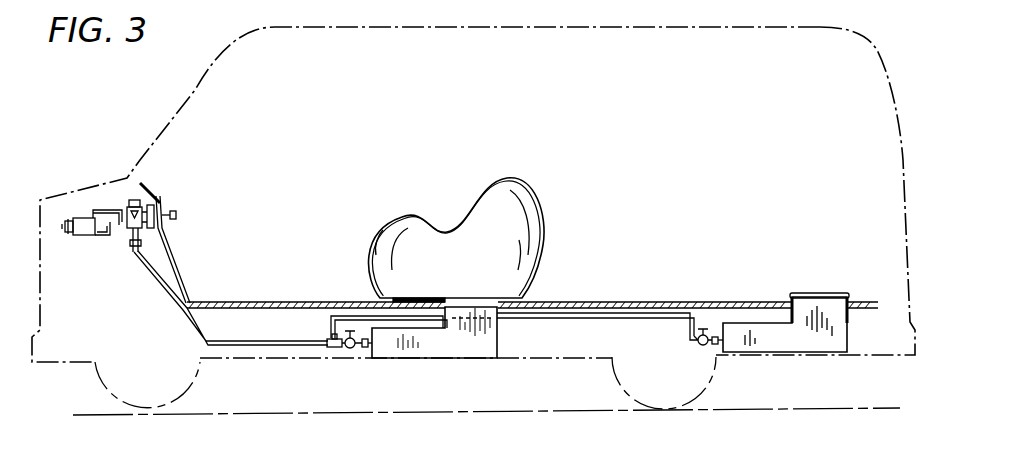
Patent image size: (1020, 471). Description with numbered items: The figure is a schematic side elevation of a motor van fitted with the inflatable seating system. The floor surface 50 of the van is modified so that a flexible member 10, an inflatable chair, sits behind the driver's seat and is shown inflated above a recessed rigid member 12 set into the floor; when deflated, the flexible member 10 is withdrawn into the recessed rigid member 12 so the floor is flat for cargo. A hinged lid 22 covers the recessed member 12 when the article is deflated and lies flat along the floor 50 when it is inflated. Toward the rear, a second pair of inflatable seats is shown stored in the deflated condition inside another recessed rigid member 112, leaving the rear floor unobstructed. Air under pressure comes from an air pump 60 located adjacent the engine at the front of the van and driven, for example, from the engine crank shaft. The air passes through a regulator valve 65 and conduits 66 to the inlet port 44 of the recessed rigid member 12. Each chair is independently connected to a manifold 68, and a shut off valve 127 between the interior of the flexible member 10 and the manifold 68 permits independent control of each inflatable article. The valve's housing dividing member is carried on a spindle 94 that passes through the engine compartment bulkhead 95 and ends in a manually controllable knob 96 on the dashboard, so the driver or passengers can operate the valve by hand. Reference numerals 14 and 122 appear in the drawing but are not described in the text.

The flexible member 10 is at (461, 204).
The recessed rigid member 12 is at (499, 342).
The tank wall 14 is at (383, 238).
The hinged lid 22 is at (425, 293).
The inlet port 44 is at (370, 343).
The floor surface 50 is at (553, 302).
The air pump 60 is at (85, 236).
The regulator valve 65 is at (157, 205).
The conduits 66 is at (293, 339).
The manifold 68 is at (335, 348).
The spindle 94 is at (165, 224).
The engine compartment bulkhead 95 is at (170, 236).
The manually controllable knob 96 is at (177, 214).
The recessed rigid member 112 is at (849, 333).
The cover plate 122 is at (817, 294).
The shut off valve 127 is at (352, 349).